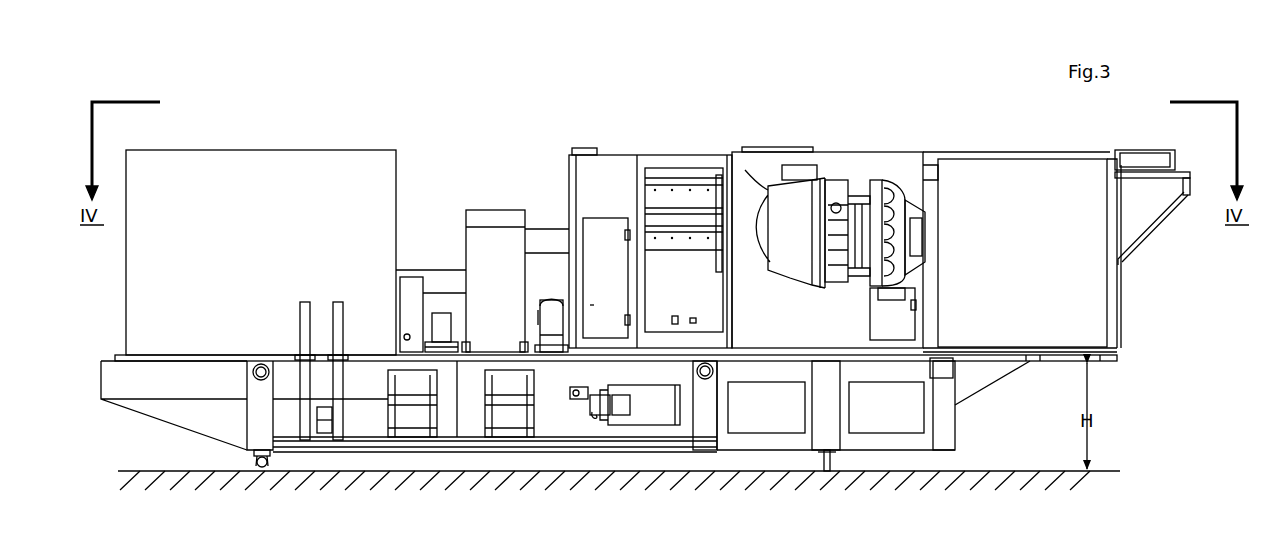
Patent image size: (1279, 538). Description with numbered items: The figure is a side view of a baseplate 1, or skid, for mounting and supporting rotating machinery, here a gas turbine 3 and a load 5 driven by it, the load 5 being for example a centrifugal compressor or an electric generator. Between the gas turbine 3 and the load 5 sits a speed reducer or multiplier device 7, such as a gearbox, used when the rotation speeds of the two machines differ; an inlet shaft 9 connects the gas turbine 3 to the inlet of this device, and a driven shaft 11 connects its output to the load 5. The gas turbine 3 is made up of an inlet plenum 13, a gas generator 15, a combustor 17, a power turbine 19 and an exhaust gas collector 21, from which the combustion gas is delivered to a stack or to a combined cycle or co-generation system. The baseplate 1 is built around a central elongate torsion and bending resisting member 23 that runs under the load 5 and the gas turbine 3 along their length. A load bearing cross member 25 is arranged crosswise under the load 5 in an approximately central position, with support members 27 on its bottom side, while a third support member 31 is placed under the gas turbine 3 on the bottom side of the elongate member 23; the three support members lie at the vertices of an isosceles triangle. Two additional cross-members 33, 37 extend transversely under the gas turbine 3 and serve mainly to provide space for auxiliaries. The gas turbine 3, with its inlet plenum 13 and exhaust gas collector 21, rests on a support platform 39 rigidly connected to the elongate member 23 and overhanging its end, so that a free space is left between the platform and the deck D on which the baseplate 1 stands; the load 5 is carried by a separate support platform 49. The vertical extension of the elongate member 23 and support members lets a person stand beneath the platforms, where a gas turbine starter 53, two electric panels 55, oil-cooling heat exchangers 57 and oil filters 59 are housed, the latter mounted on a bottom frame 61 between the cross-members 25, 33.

The baseplate 1 is at (659, 415).
The gas turbine 3 is at (921, 205).
The load 5 is at (232, 148).
The speed reducer or multiplier device 7 is at (498, 206).
The inlet shaft 9 is at (548, 240).
The driven shaft 11 is at (427, 276).
The inlet plenum 13 is at (987, 175).
The gas generator 15 is at (878, 170).
The combustor 17 is at (830, 175).
The power turbine 19 is at (760, 185).
The exhaust gas collector 21 is at (603, 166).
The central elongate torsion and bending resisting member 23 is at (867, 442).
The load bearing cross member 25 is at (260, 418).
The support member 27 is at (258, 467).
The support member 31 is at (828, 460).
The additional cross-member 33 is at (704, 437).
The additional cross-member 37 is at (945, 430).
The support platform 39 is at (1000, 356).
The support platform 49 is at (120, 355).
The gas turbine starter 53 is at (646, 414).
The electric panels 55 is at (826, 407).
The oil-cooling heat exchangers 57 is at (500, 427).
The oil filters 59 is at (322, 432).
The bottom frame 61 is at (562, 440).
The deck D is at (1112, 470).